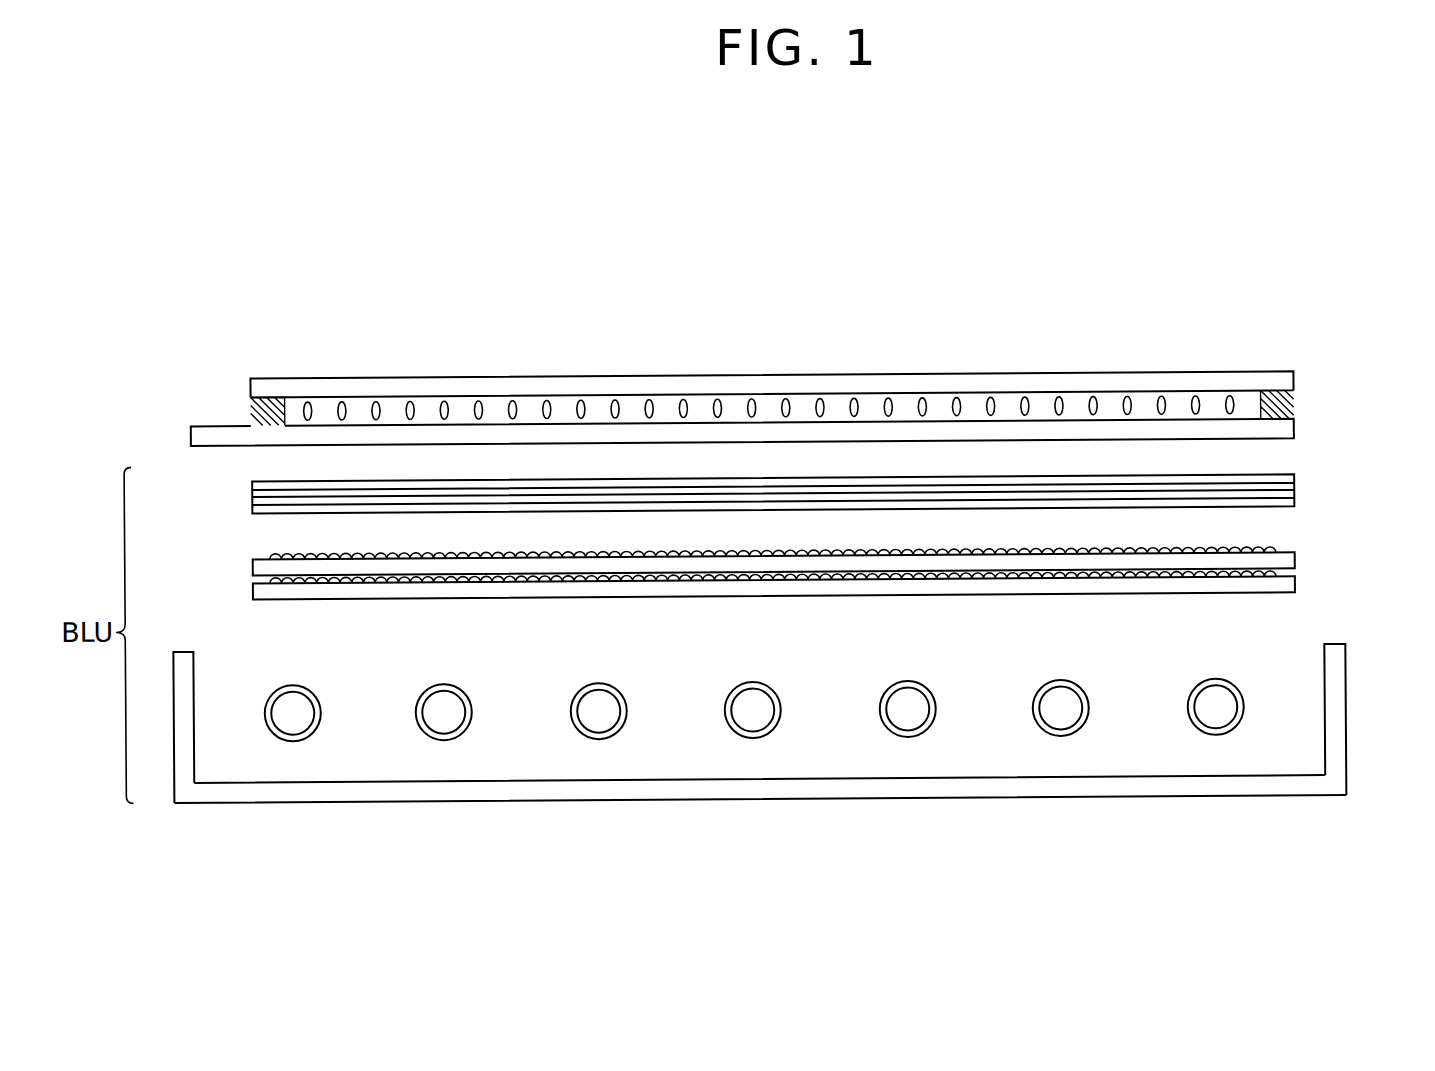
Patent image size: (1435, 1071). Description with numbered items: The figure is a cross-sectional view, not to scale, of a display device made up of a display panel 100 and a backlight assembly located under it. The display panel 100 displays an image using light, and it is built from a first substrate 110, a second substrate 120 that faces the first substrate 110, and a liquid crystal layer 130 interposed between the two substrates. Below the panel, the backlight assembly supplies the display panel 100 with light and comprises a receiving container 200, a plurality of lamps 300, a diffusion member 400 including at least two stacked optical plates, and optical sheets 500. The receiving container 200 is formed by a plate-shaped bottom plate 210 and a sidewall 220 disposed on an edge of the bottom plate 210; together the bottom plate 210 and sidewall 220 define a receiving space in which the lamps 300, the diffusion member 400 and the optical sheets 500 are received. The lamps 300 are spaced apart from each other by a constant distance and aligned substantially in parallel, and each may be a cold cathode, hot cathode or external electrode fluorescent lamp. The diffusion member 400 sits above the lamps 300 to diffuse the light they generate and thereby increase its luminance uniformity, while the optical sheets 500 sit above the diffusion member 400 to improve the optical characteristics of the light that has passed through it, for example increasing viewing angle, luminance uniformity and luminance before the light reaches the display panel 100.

The display panel 100 is at (478, 296).
The first substrate 110 is at (493, 431).
The second substrate 120 is at (630, 388).
The liquid crystal layer 130 is at (569, 414).
The receiving container 200 is at (760, 792).
The bottom plate 210 is at (282, 789).
The sidewall 220 is at (183, 723).
The lamps 300 is at (447, 720).
The diffusion member 400 is at (1310, 544).
The optical sheets 500 is at (1302, 492).